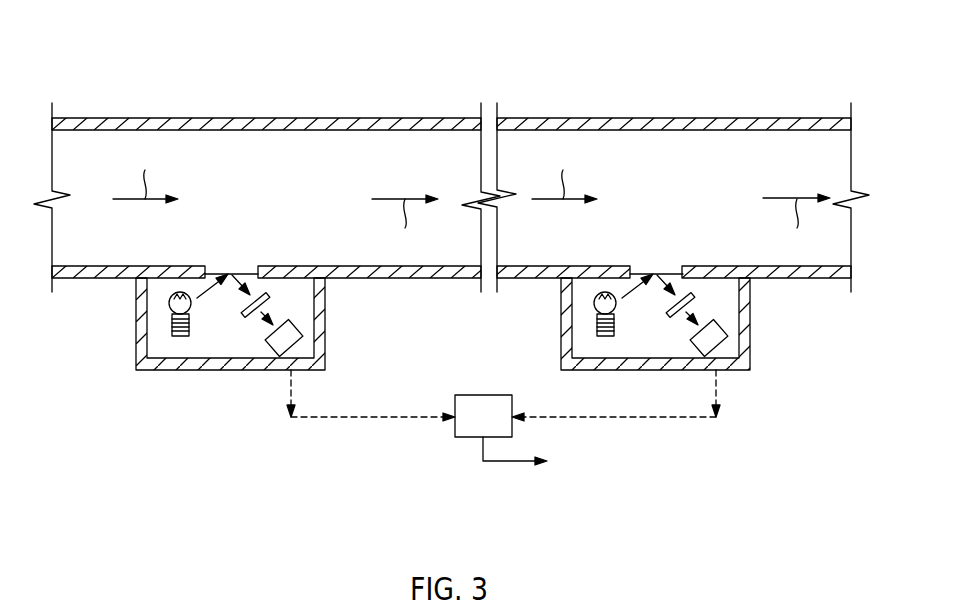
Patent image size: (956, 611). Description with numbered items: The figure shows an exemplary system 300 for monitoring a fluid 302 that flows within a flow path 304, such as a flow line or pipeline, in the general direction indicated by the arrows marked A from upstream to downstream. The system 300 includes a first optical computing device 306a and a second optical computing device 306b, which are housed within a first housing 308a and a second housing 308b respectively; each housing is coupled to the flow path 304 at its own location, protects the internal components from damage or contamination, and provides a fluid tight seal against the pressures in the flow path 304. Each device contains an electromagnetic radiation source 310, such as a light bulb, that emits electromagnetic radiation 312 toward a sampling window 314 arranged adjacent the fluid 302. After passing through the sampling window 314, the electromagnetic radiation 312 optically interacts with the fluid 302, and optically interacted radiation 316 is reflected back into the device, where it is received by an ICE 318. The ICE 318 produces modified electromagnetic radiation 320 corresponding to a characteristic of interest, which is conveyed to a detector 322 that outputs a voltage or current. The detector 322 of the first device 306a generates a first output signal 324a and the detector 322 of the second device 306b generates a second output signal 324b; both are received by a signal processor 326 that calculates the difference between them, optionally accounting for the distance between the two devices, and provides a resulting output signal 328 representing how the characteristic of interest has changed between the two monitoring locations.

The system 300 is at (170, 413).
The fluid 302 is at (330, 164).
The flow path 304 is at (655, 123).
The first optical computing device 306a is at (108, 313).
The second optical computing device 306b is at (775, 326).
The first housing 308a is at (327, 315).
The second housing 308b is at (562, 315).
The electromagnetic radiation source 310 is at (178, 336).
The electromagnetic radiation 312 is at (217, 282).
The sampling window 314 is at (255, 268).
The optically interacted radiation 316 is at (232, 287).
The ICE 318 is at (267, 293).
The modified electromagnetic radiation 320 is at (260, 316).
The detector 322 is at (270, 348).
The first output signal 324a is at (335, 417).
The second output signal 324b is at (665, 417).
The signal processor 326 is at (469, 430).
The resulting output signal 328 is at (508, 462).